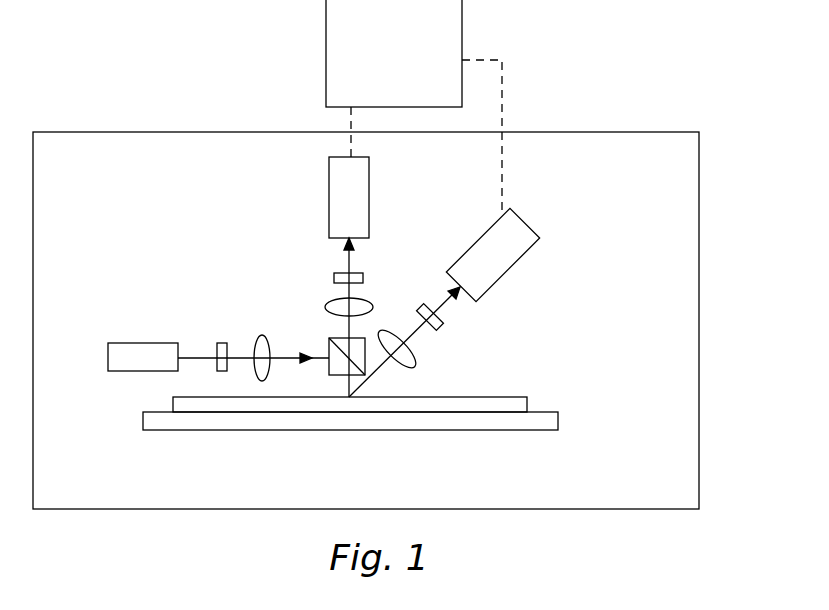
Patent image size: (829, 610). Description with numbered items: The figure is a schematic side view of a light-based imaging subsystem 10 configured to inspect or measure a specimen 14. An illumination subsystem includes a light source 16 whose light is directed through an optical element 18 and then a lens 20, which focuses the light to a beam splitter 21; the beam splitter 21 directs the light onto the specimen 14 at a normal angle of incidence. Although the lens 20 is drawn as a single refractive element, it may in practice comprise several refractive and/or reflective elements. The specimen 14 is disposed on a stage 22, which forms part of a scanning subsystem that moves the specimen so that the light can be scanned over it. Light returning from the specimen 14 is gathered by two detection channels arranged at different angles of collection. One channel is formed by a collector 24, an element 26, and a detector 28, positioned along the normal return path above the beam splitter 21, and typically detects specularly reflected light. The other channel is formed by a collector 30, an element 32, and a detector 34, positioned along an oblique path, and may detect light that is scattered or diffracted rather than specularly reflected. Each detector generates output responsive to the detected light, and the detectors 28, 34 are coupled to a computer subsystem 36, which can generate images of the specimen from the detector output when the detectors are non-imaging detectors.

The imaging subsystem 10 is at (699, 152).
The specimen 14 is at (173, 400).
The light source 16 is at (118, 343).
The optical element 18 is at (222, 343).
The lens 20 is at (260, 335).
The beam splitter 21 is at (340, 338).
The stage 22 is at (143, 423).
The collector 24 is at (329, 305).
The element 26 is at (332, 272).
The detector 28 is at (329, 200).
The collector 30 is at (415, 362).
The element 32 is at (442, 327).
The detector 34 is at (523, 257).
The computer subsystem 36 is at (381, 87).